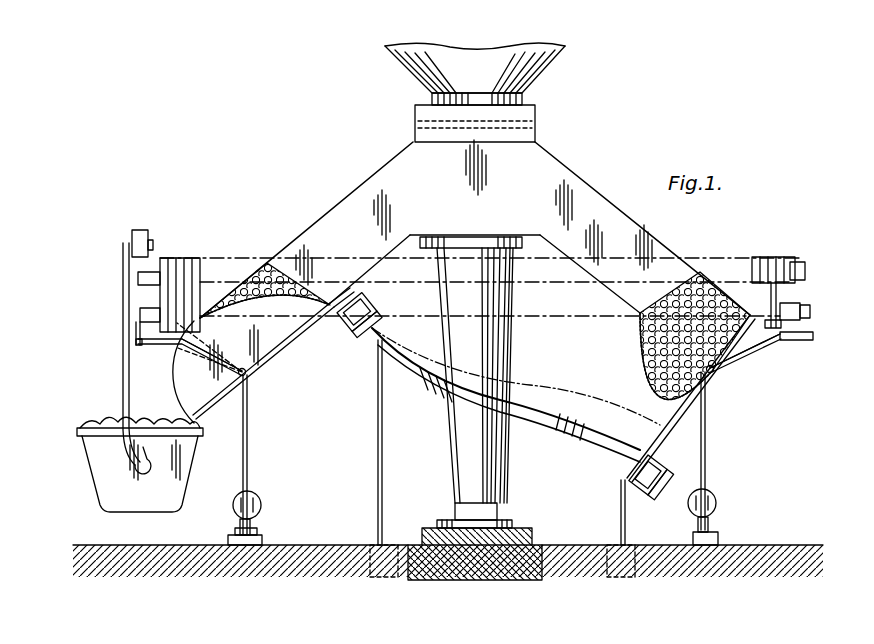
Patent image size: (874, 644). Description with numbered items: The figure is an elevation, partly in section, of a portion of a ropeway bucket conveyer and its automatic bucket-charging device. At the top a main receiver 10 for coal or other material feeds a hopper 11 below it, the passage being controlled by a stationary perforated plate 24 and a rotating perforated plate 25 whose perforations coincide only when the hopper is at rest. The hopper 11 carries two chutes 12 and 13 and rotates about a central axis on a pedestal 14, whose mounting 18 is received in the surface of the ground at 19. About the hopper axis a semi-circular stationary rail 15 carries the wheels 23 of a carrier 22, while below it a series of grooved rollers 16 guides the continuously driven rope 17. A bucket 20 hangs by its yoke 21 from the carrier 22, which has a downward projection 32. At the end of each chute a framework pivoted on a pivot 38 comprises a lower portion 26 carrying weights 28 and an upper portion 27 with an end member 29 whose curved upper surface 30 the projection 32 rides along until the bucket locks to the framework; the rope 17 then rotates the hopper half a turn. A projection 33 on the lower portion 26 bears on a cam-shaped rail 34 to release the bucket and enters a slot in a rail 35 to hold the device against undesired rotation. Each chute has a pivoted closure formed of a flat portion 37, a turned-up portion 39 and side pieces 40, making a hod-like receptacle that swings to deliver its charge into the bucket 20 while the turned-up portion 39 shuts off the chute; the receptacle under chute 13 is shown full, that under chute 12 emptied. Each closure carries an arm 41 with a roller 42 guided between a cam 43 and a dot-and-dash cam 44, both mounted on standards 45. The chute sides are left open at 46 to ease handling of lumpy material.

The main receiver 10 is at (545, 70).
The hopper 11 is at (517, 132).
The chute 12 is at (352, 202).
The chute 13 is at (590, 197).
The pedestal 14 is at (490, 351).
The stationary rail 15 is at (138, 278).
The rollers 16 is at (132, 306).
The driving rope 17 is at (560, 320).
The mounting 18 is at (540, 578).
The ground surface 19 is at (604, 556).
The bucket 20 is at (196, 462).
The yoke 21 is at (122, 390).
The carrier 22 is at (140, 315).
The wheels 23 is at (143, 230).
The stationary perforated plate 24 is at (440, 100).
The rotating perforated plate 25 is at (430, 128).
The lower framework portion 26 is at (248, 430).
The upper framework portion 27 is at (153, 345).
The weights 28 is at (261, 498).
The end member 29 is at (138, 343).
The curved upper surface 30 is at (814, 336).
The projection 32 is at (136, 334).
The projection 33 is at (240, 526).
The cam-shaped rail 34 is at (228, 540).
The rail 35 is at (719, 539).
The flat portion 37 is at (236, 385).
The pivot 38 is at (247, 374).
The turned-up portion 39 is at (267, 262).
The side pieces 40 is at (268, 350).
The arm 41 is at (322, 320).
The roller 42 is at (372, 308).
The cam 43 is at (525, 432).
The cam 44 is at (520, 390).
The standards 45 is at (378, 427).
The chute side opening 46 is at (233, 287).